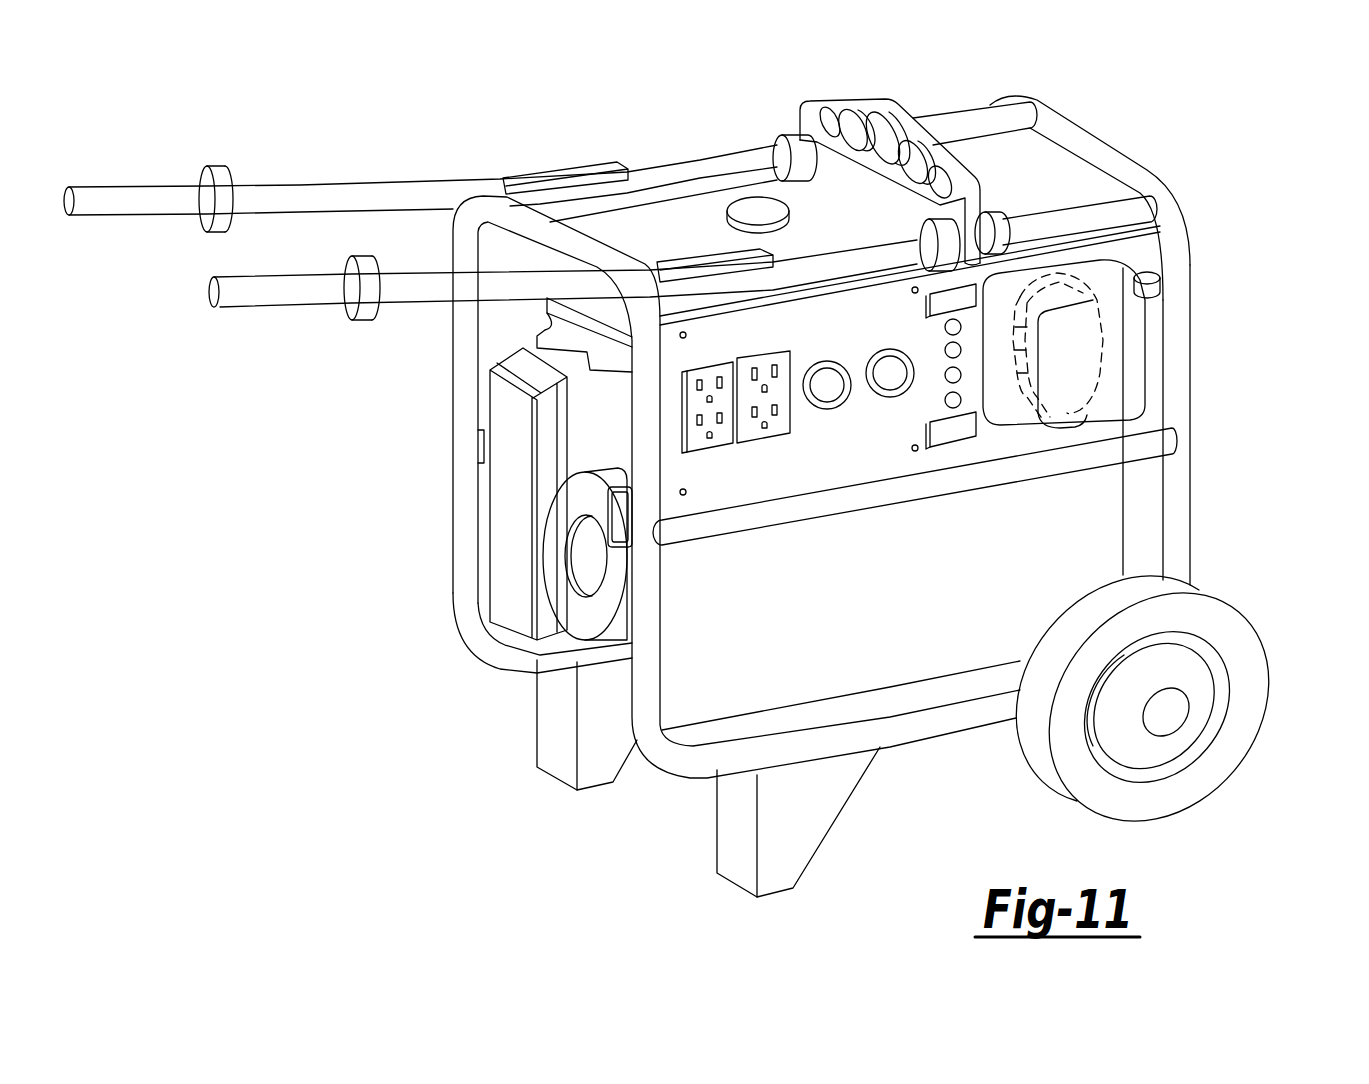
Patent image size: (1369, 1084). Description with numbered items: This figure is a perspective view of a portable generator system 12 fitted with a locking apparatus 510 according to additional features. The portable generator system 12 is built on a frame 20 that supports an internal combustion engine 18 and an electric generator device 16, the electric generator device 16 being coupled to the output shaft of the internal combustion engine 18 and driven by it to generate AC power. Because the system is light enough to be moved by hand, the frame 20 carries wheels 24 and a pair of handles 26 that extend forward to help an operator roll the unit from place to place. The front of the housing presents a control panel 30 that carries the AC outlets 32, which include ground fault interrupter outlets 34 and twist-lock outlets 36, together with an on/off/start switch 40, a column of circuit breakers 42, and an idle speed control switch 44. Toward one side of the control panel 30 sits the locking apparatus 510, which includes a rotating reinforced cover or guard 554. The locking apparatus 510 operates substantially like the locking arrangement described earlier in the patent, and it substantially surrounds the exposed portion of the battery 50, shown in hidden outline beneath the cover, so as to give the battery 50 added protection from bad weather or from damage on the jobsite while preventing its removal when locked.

The portable generator system 12 is at (1117, 137).
The electric generator device 16 is at (540, 538).
The internal combustion engine 18 is at (567, 582).
The frame 20 is at (1173, 220).
The wheels 24 is at (1245, 655).
The handles 26 is at (112, 205).
The control panel 30 is at (880, 465).
The AC outlets 32 is at (752, 472).
The ground fault interrupter outlets 34 is at (765, 370).
The twist-lock outlets 36 is at (878, 383).
The on/off/start switch 40 is at (943, 297).
The circuit breakers 42 is at (952, 352).
The idle speed control switch 44 is at (967, 433).
The battery 50 is at (1067, 415).
The locking apparatus 510 is at (1200, 374).
The rotating reinforced cover or guard 554 is at (1132, 338).